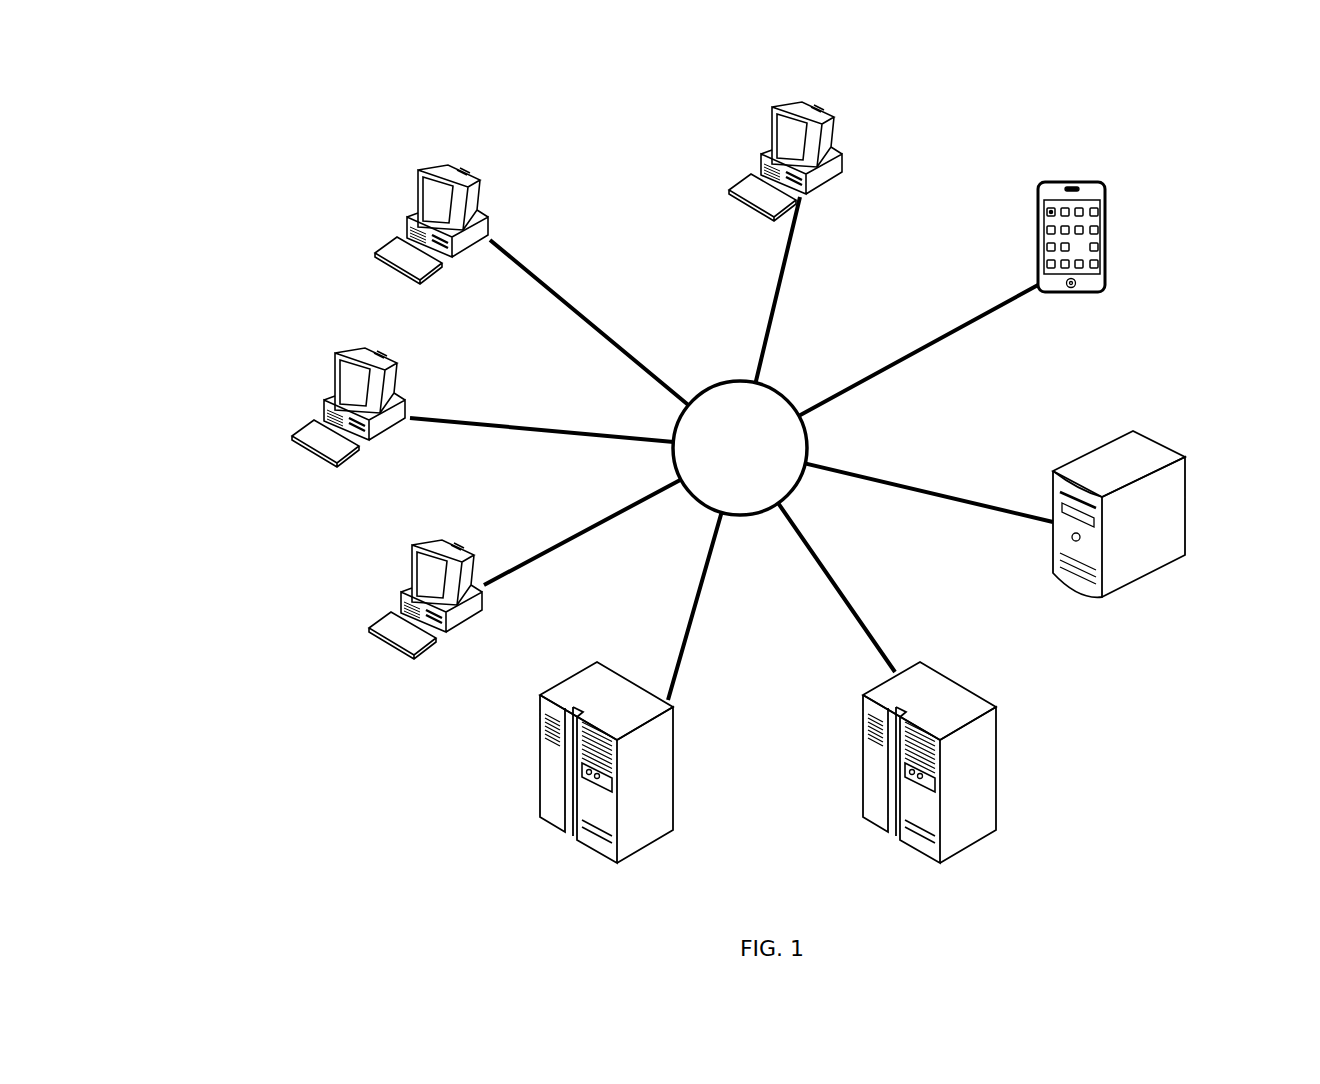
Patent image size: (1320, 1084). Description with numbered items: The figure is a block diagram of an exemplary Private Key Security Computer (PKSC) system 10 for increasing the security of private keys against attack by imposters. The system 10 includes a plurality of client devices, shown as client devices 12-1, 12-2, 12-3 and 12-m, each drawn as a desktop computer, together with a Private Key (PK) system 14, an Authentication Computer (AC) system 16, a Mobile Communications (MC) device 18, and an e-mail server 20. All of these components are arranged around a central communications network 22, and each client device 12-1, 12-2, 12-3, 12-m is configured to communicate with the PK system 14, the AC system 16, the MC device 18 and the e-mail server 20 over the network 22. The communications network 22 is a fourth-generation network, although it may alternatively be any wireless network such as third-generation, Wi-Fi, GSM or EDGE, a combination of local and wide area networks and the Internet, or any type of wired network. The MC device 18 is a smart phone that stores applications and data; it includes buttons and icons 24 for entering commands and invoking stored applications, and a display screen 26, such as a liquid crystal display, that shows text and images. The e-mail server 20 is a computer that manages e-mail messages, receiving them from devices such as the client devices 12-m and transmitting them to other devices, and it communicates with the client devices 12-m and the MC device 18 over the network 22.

The Private Key Security Computer (PKSC) System 10 is at (245, 143).
The client device 12-1 is at (404, 590).
The client device 12-2 is at (336, 357).
The client device 12-3 is at (478, 183).
The client device 12-m is at (768, 147).
The Private Key (PK) System 14 is at (538, 818).
The Authentication Computer (AC) System 16 is at (1186, 485).
The Mobile Communications (MC) Device 18 is at (1068, 208).
The E-Mail Server 20 is at (998, 707).
The communications network 22 is at (727, 425).
The buttons and icons 24 is at (1046, 210).
The display screen 26 is at (1087, 238).